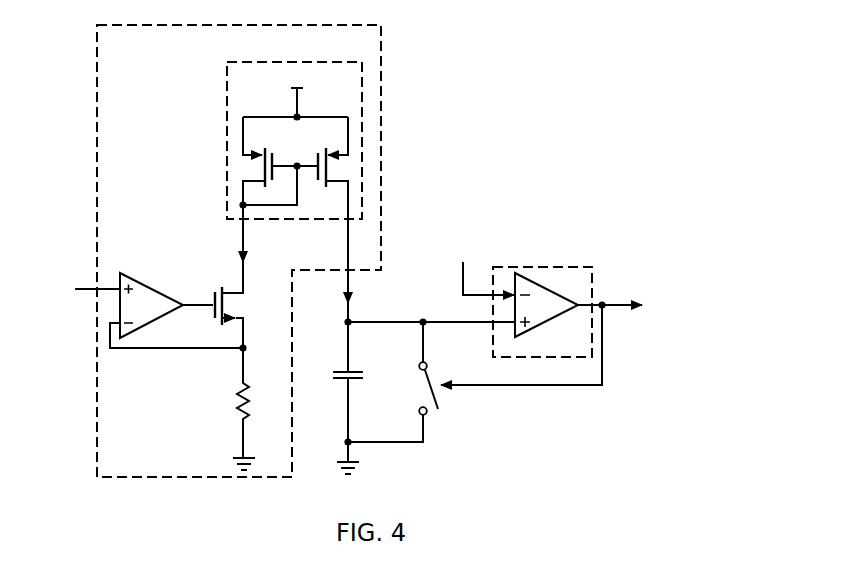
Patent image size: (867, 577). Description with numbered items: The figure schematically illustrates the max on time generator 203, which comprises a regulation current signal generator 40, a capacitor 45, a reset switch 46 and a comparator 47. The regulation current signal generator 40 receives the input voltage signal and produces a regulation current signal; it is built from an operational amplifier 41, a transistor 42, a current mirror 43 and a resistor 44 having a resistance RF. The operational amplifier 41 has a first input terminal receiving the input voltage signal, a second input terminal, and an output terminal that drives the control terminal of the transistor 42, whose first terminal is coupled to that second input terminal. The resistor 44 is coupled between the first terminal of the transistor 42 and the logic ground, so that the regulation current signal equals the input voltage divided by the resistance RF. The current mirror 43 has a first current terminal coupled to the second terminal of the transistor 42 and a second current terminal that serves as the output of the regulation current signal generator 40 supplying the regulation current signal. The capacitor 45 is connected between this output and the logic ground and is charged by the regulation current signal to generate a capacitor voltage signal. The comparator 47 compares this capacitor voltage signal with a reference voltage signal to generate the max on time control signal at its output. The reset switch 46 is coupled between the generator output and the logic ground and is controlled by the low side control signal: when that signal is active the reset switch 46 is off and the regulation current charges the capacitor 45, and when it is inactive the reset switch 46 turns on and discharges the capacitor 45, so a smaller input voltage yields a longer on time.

The max on time generator 203 is at (490, 70).
The regulation current signal generator 40 is at (97, 141).
The operational amplifier 41 is at (177, 310).
The transistor 42 is at (216, 278).
The current mirror 43 is at (227, 151).
The resistor 44 is at (237, 399).
The capacitor 45 is at (352, 388).
The reset switch 46 is at (444, 411).
The comparator 47 is at (592, 292).